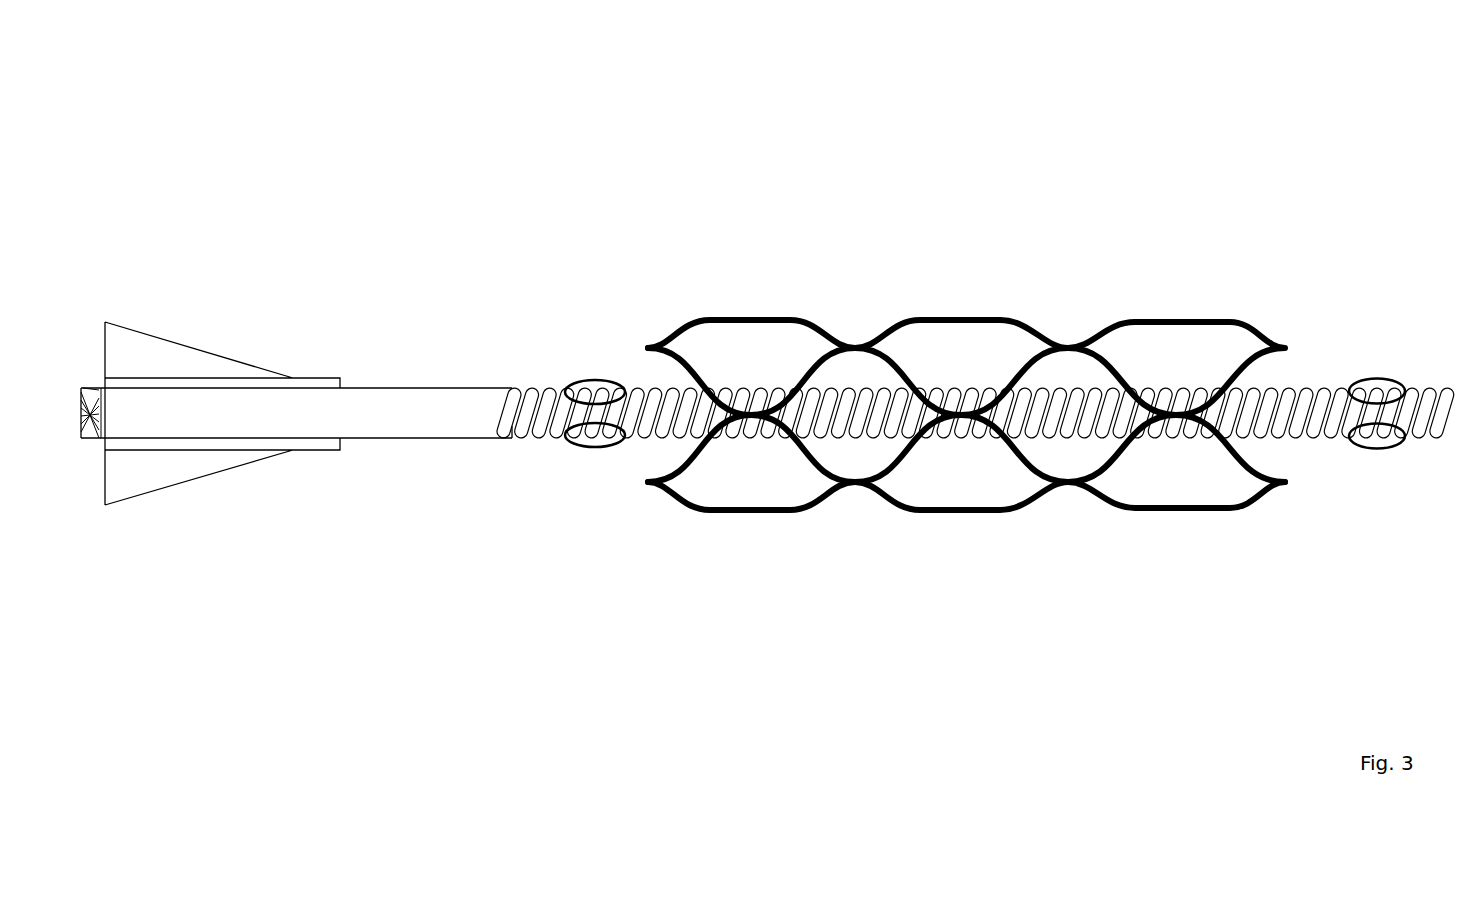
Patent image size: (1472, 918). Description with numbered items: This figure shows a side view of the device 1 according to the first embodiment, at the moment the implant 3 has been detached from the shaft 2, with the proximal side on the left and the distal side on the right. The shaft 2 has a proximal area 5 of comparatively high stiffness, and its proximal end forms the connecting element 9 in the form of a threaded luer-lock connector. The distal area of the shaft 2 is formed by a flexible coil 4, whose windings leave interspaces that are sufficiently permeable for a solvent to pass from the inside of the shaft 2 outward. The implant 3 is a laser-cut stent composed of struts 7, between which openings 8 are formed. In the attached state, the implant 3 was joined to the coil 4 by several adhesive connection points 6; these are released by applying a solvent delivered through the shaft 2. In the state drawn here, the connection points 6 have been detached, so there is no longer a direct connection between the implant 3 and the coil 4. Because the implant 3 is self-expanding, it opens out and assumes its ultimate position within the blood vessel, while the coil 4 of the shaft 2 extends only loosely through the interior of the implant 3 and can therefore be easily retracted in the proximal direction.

The device 1 is at (889, 176).
The shaft 2 is at (489, 361).
The implant 3 is at (968, 535).
The coil 4 is at (848, 405).
The proximal area 5 is at (430, 460).
The connection points 6 is at (589, 360).
The struts 7 is at (1084, 328).
The openings 8 is at (1193, 338).
The connecting element 9 is at (214, 499).